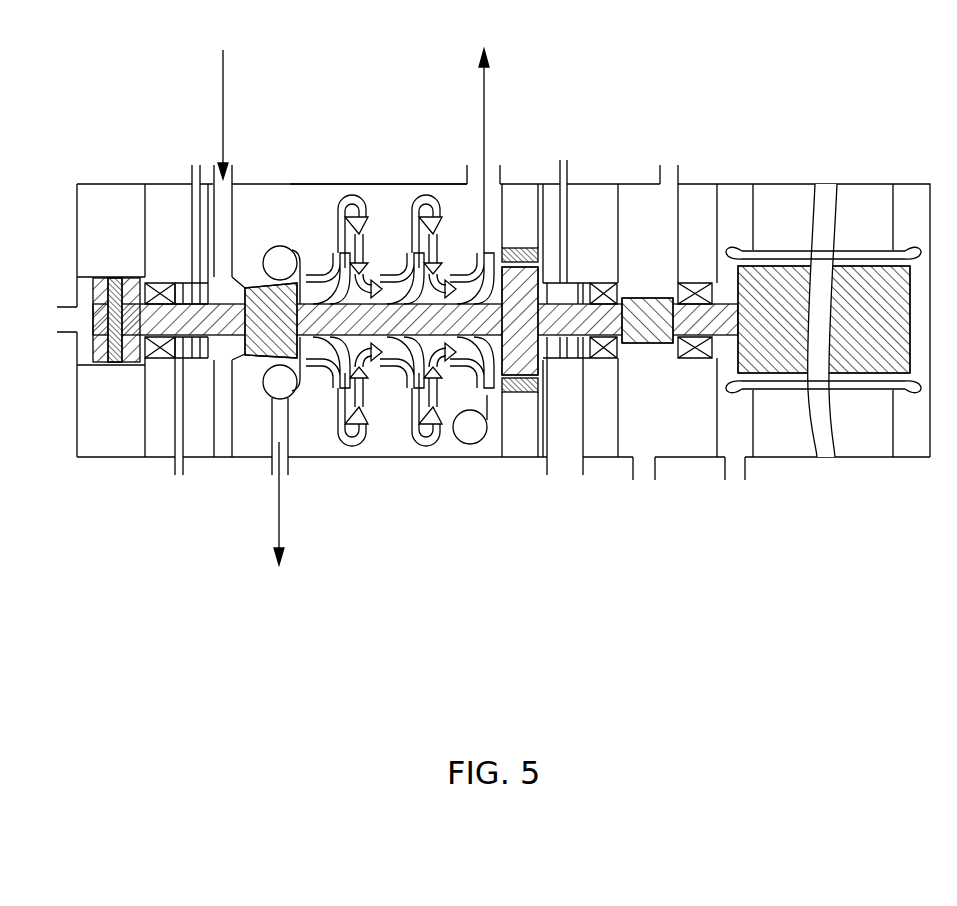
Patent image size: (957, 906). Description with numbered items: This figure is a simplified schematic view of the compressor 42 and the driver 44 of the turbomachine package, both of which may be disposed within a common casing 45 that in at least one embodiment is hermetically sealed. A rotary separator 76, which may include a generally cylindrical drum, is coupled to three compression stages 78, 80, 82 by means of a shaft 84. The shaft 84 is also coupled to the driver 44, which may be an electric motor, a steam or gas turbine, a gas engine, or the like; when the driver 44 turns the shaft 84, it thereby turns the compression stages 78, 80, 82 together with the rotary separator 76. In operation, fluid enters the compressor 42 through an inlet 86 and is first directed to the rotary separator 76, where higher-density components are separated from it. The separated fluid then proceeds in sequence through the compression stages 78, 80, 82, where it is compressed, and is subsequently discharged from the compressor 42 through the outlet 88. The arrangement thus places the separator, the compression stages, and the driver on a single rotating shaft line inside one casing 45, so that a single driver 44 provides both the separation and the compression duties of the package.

The compressor 42 is at (402, 167).
The driver 44 is at (778, 277).
The casing 45 is at (297, 183).
The rotary separator 76 is at (242, 296).
The compression stage 78 is at (338, 400).
The compression stage 80 is at (415, 400).
The compression stage 82 is at (492, 400).
The shaft 84 is at (176, 303).
The inlet 86 is at (229, 186).
The outlet 88 is at (499, 182).